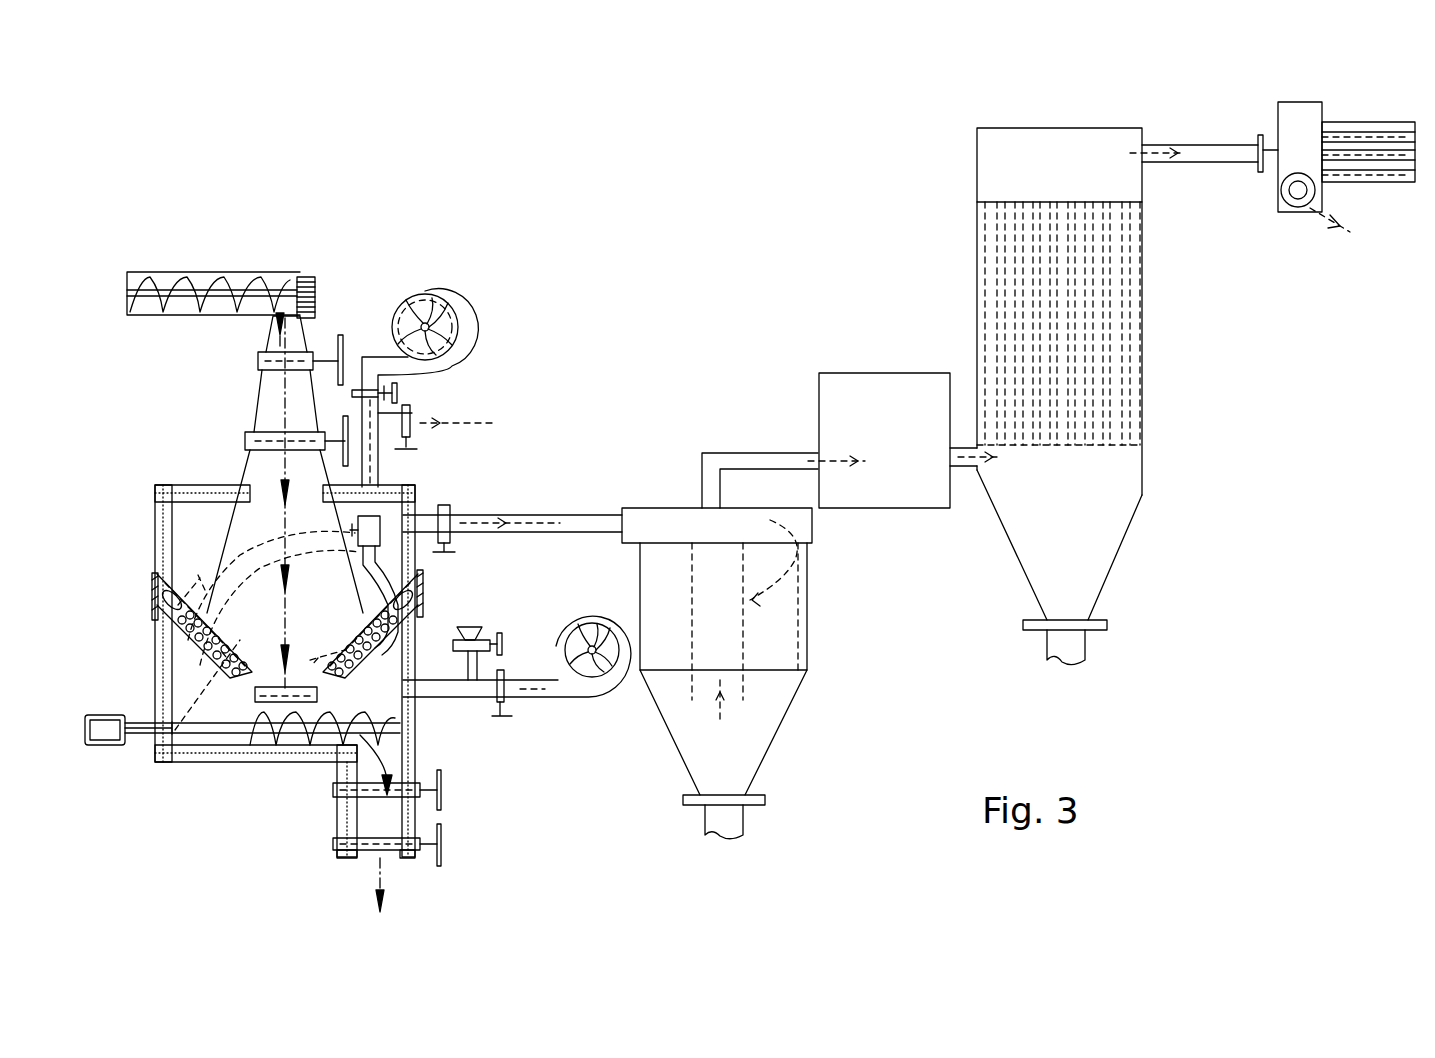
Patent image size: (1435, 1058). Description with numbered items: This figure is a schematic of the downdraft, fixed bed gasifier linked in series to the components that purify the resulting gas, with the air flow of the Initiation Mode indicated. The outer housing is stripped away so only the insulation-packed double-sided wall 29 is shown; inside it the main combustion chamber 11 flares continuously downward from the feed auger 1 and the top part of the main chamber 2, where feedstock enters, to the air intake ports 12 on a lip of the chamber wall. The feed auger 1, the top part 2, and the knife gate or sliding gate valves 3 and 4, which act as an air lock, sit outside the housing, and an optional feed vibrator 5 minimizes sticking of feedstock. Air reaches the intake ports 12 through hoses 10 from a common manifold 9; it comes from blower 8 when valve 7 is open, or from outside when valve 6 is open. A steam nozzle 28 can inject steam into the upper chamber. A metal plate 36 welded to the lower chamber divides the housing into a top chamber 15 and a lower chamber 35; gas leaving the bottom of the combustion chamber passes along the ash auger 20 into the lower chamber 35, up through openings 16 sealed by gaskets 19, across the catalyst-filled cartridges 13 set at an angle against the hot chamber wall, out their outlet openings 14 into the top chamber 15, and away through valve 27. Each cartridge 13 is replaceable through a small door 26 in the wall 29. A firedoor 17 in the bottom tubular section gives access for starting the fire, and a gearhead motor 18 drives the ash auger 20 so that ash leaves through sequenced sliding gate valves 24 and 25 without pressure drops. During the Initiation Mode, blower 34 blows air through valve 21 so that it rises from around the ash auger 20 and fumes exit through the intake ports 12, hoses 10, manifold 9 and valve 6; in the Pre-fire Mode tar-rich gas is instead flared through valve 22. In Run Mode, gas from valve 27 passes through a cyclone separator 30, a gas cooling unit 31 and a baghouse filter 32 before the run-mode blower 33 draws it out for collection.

The feed auger 1 is at (240, 272).
The top part of the main chamber 2 is at (266, 331).
The sliding gate valve 3 is at (310, 348).
The sliding gate valve 4 is at (318, 436).
The feed vibrator 5 is at (310, 282).
The valve 6 is at (412, 448).
The valve 7 is at (402, 396).
The blower 8 is at (455, 306).
The manifold 9 is at (357, 528).
The hoses 10 is at (278, 530).
The combustion chamber 11 is at (307, 618).
The air intake ports 12 is at (216, 625).
The catalyst cartridges 13 is at (208, 655).
The outlet opening 14 is at (175, 622).
The top chamber 15 is at (208, 523).
The openings 16 is at (350, 680).
The firedoor 17 is at (325, 672).
The gearhead motor 18 is at (98, 742).
The gaskets 19 is at (210, 676).
The ash auger 20 is at (268, 762).
The valve 21 is at (506, 682).
The valve 22 is at (503, 640).
The sliding gate valve 24 is at (437, 782).
The sliding gate valve 25 is at (440, 838).
The door 26 is at (425, 584).
The valve 27 is at (448, 508).
The steam nozzle 28 is at (390, 487).
The double-sided wall 29 is at (160, 488).
The cyclone separator 30 is at (743, 646).
The gas cooling unit 31 is at (909, 440).
The baghouse filter 32 is at (1117, 396).
The blower 33 is at (1305, 102).
The blower 34 is at (575, 616).
The lower chamber 35 is at (256, 697).
The metal plate 36 is at (400, 694).